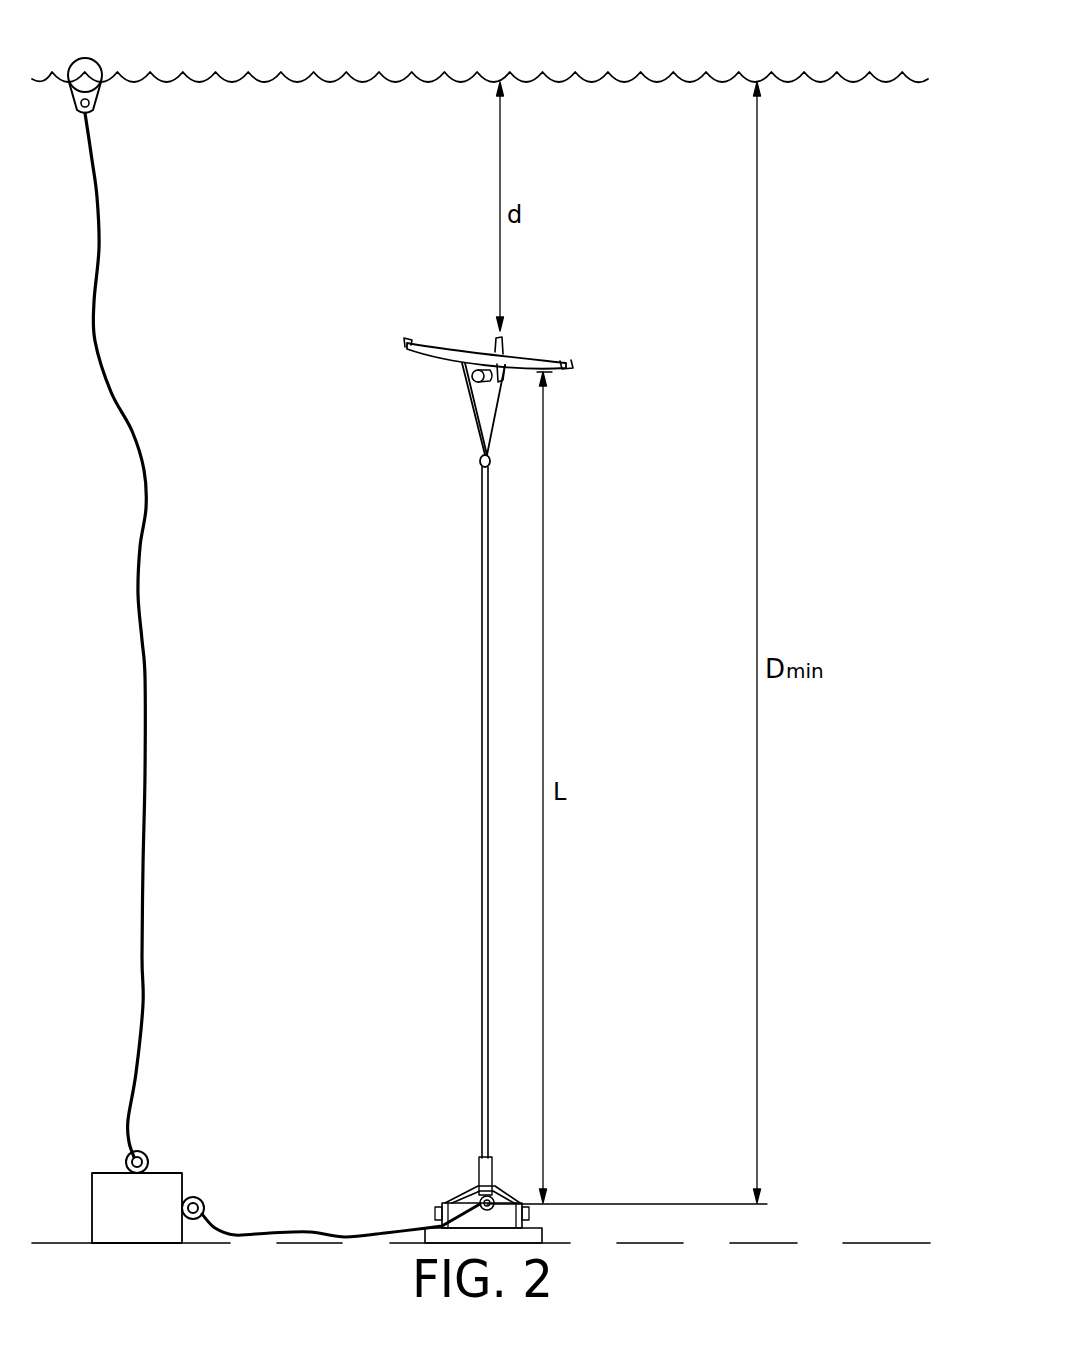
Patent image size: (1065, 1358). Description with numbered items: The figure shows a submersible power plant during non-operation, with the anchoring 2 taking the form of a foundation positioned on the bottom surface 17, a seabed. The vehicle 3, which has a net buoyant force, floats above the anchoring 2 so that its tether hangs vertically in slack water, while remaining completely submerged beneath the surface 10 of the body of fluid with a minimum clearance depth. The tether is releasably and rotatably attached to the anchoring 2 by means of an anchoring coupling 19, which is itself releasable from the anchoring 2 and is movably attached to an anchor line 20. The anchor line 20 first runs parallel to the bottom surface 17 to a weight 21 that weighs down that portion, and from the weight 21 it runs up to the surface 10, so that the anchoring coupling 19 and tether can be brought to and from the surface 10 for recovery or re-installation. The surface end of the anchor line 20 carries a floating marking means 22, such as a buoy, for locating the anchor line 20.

The anchoring 2 is at (543, 1237).
The vehicle 3 is at (560, 325).
The surface 10 is at (265, 82).
The bottom surface 17 is at (646, 1242).
The anchoring coupling 19 is at (482, 1197).
The anchor line 20 is at (145, 675).
The weight 21 is at (170, 1173).
The floating marking means 22 is at (85, 77).